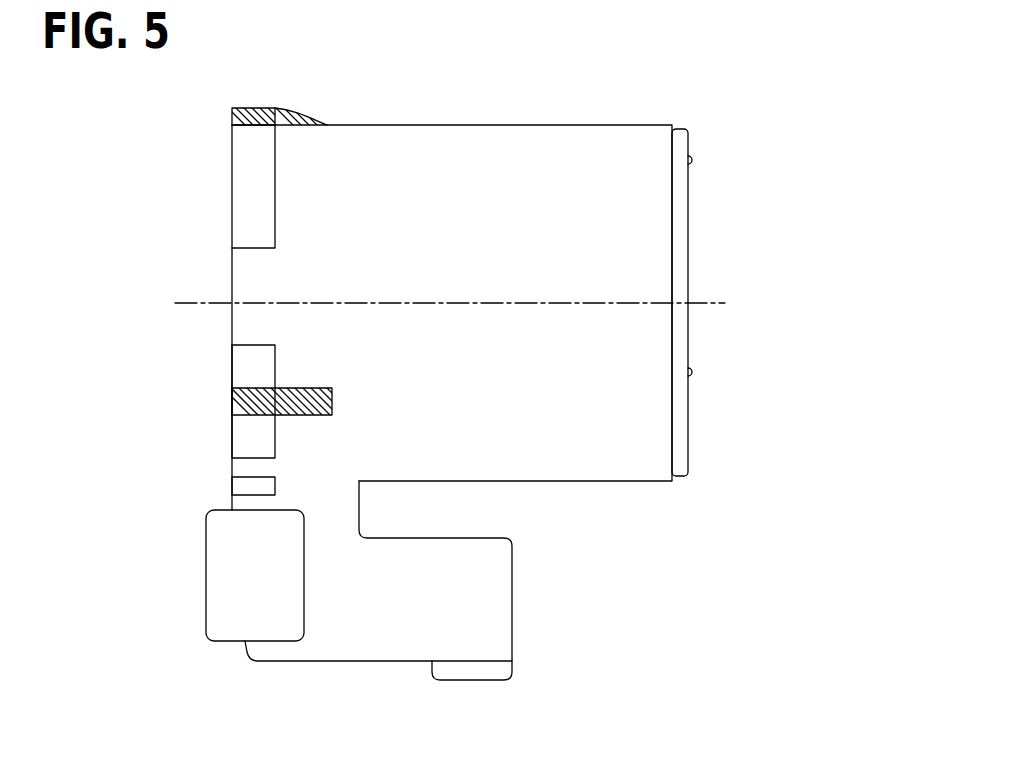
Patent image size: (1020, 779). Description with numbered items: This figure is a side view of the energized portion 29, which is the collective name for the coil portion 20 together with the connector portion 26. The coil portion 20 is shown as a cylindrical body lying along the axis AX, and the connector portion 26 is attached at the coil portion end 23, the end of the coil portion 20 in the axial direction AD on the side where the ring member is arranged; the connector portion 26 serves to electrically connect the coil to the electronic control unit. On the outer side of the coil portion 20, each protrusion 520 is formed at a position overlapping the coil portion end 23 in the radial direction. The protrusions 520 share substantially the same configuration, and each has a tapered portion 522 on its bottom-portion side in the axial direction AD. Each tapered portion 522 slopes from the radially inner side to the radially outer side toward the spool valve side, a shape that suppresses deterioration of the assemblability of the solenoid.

The coil portion 20 is at (545, 472).
The coil portion end 23 is at (292, 455).
The connector portion 26 is at (332, 632).
The energized portion 29 is at (742, 123).
The protrusion 520 is at (253, 106).
The tapered portion 522 is at (293, 113).
The axis AX is at (472, 307).
The axial direction AD is at (802, 715).